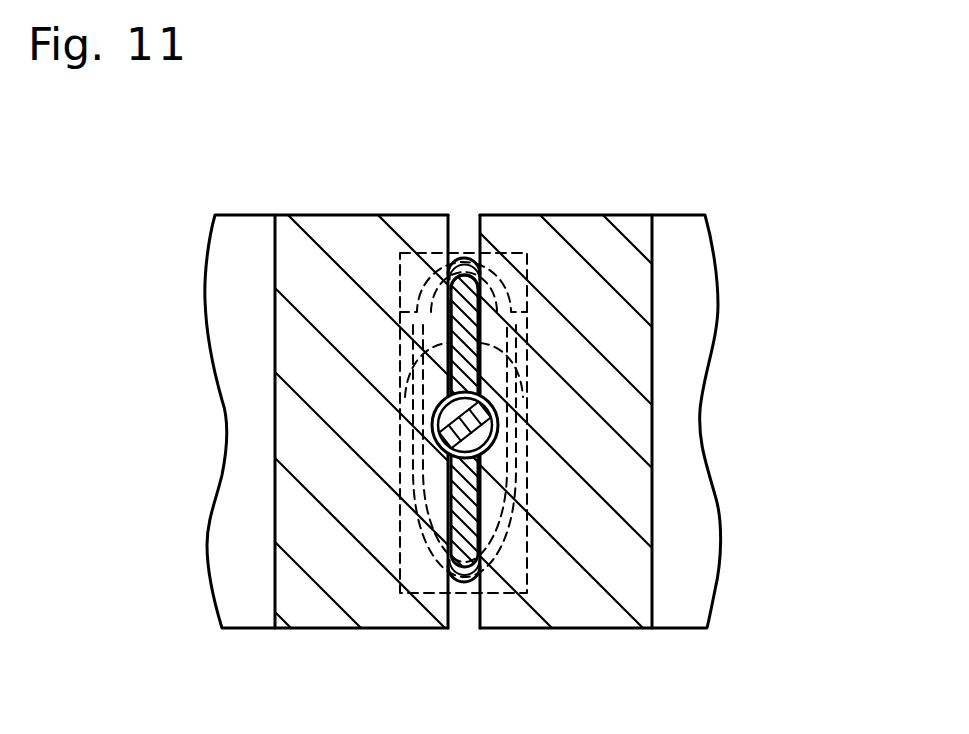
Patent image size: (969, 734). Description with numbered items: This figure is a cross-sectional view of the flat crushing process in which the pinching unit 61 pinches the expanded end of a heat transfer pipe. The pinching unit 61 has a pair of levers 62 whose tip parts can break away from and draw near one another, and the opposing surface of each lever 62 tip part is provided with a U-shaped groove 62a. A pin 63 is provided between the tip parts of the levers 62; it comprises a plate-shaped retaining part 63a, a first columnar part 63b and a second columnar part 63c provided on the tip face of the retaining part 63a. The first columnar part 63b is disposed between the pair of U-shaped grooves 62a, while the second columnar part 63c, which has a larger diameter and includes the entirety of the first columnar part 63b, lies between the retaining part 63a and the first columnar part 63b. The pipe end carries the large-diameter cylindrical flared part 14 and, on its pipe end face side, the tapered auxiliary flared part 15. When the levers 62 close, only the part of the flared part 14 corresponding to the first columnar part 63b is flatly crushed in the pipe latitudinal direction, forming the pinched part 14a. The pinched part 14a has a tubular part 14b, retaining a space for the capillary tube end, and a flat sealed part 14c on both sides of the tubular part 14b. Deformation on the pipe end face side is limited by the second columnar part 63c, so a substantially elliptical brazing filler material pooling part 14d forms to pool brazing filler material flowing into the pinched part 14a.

The pinching unit 61 is at (740, 237).
The lever 62 is at (258, 636).
The U-shaped groove 62a is at (436, 410).
The pin 63 is at (462, 233).
The retaining part 63a is at (527, 280).
The first columnar part 63b is at (438, 408).
The second columnar part 63c is at (420, 400).
The flared part 14 is at (535, 433).
The pinched part 14a is at (518, 411).
The tubular part 14b is at (485, 405).
The sealed part 14c is at (452, 322).
The brazing filler material pooling part 14d is at (448, 355).
The auxiliary flared part 15 is at (505, 315).